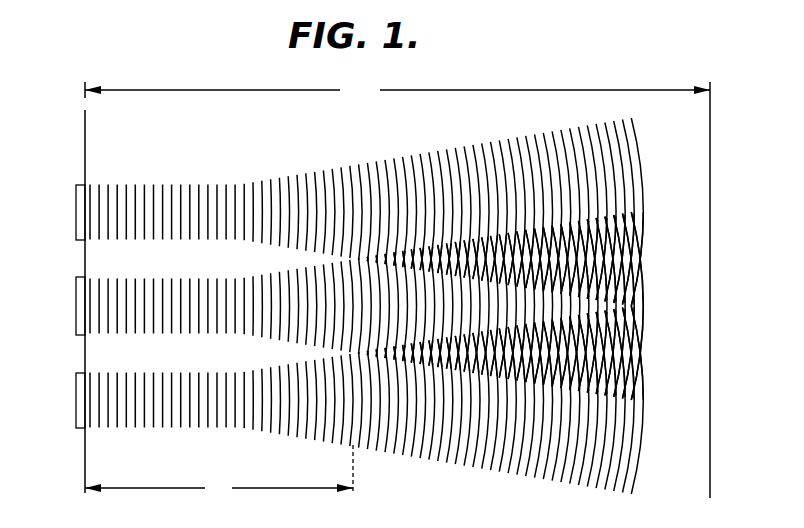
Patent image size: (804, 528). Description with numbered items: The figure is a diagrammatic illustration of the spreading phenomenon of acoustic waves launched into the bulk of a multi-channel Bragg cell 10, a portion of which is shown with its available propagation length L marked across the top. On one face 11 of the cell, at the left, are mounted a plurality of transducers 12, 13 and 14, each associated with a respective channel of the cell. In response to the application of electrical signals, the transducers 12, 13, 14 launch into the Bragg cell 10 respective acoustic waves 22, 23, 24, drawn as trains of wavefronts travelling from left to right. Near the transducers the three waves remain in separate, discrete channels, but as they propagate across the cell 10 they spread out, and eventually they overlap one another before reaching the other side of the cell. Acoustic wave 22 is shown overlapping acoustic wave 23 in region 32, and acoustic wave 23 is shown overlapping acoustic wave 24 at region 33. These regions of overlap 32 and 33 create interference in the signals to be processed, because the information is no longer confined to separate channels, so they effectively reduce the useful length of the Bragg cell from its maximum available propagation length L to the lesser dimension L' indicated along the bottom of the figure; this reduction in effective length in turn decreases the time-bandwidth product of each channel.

The multi-channel Bragg cell 10 is at (146, 144).
The face 11 is at (85, 141).
The transducer 12 is at (76, 196).
The transducer 13 is at (76, 300).
The transducer 14 is at (76, 401).
The acoustic wave 22 is at (318, 182).
The acoustic wave 23 is at (172, 283).
The acoustic wave 24 is at (213, 428).
The region of overlap 32 is at (635, 250).
The region of overlap 33 is at (635, 366).